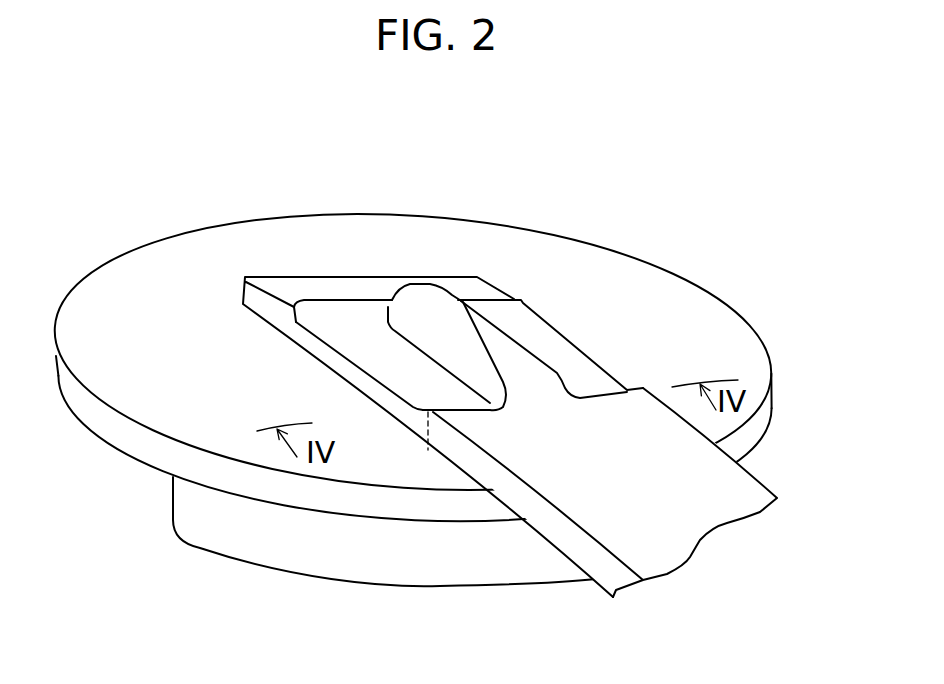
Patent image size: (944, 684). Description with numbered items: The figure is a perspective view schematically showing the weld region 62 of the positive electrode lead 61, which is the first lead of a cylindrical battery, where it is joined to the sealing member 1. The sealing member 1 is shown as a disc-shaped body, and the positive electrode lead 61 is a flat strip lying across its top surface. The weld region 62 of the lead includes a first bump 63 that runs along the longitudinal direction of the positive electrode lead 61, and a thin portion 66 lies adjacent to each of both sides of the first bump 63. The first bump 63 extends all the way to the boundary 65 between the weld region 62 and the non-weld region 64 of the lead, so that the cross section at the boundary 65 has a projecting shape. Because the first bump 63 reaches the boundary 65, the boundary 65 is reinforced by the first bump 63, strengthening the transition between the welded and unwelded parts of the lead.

The sealing member 1 is at (585, 262).
The positive electrode lead 61 is at (773, 462).
The weld region 62 is at (372, 434).
The first bump 63 is at (467, 337).
The non-weld region 64 is at (562, 482).
The boundary 65 is at (428, 455).
The thin portion 66 is at (378, 358).